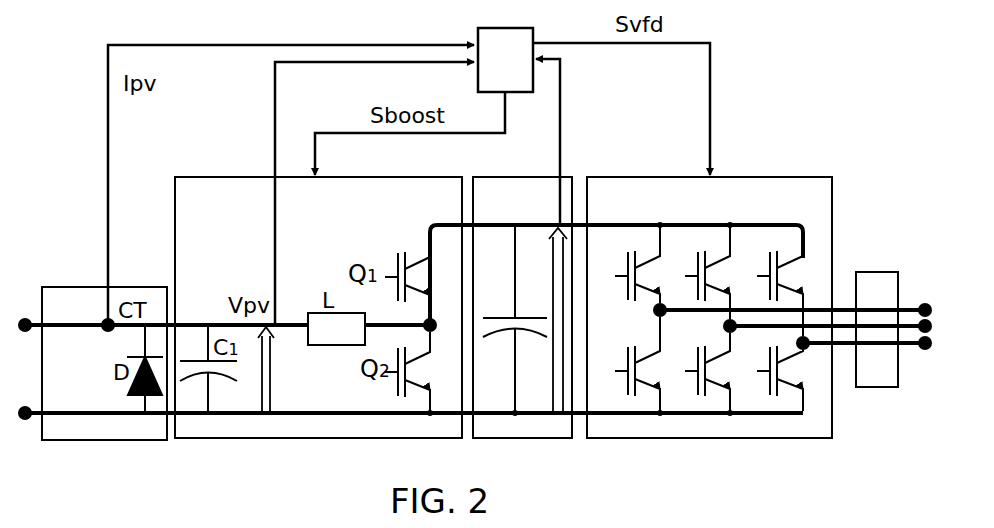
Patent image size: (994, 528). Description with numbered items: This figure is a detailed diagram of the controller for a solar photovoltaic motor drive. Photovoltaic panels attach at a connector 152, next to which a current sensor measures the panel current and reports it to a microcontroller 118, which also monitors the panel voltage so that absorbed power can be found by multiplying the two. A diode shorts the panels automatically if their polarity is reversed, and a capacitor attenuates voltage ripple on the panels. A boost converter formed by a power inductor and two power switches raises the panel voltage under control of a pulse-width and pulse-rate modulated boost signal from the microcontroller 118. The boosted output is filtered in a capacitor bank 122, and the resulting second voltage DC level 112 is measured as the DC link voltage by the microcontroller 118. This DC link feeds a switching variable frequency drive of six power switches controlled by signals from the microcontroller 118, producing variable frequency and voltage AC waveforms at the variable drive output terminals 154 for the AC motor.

The power at a second voltage 112 is at (709, 307).
The microcontroller 118 is at (524, 72).
The capacitor bank 122 is at (522, 307).
The connector 152 is at (28, 322).
The variable drive output terminals 154 is at (870, 298).